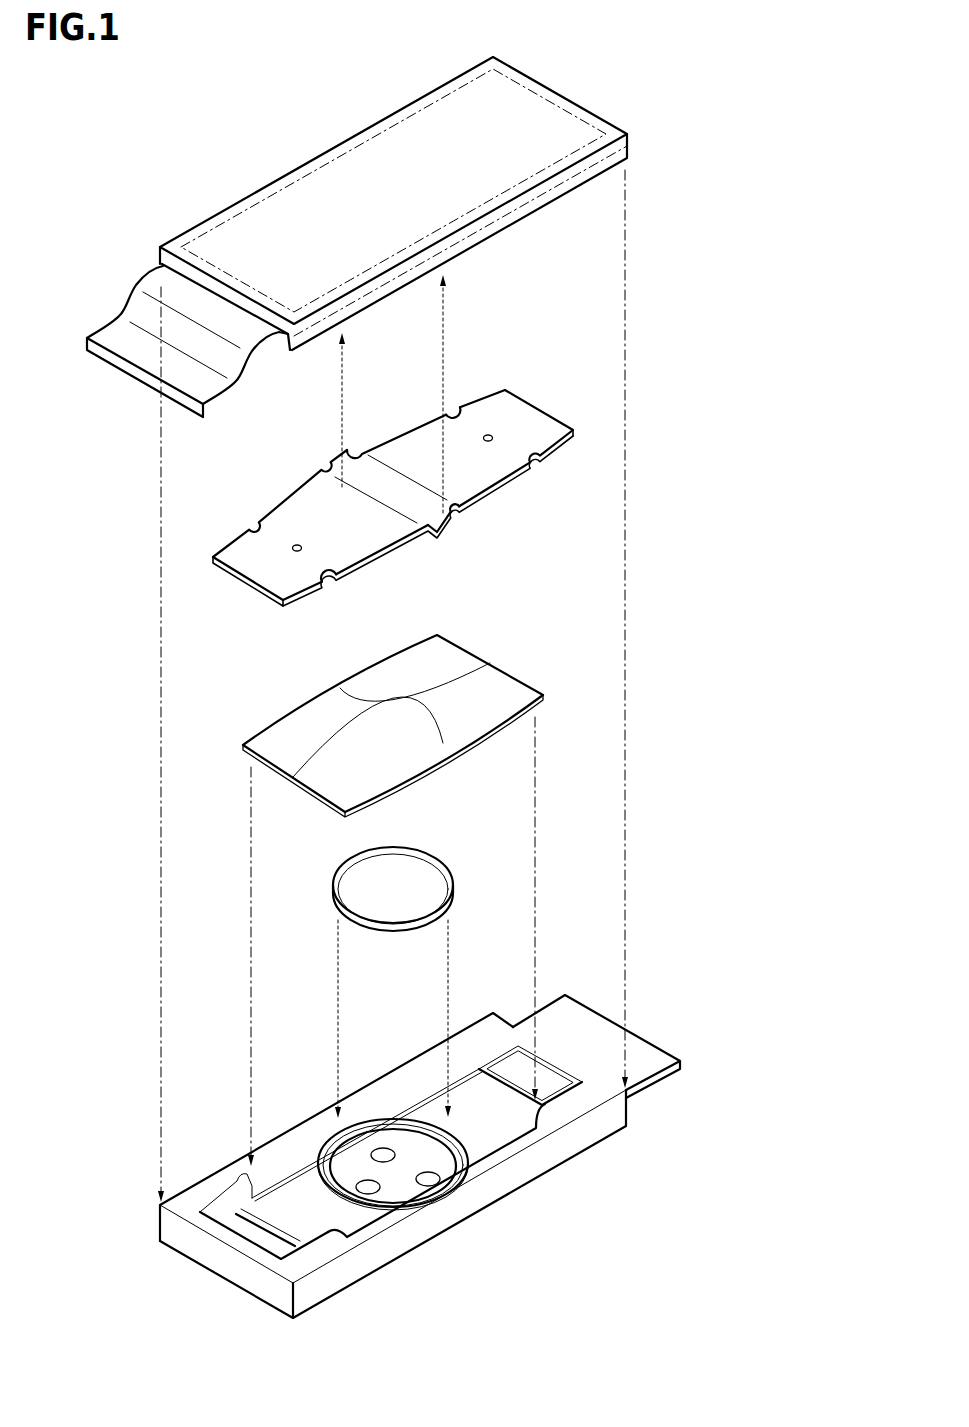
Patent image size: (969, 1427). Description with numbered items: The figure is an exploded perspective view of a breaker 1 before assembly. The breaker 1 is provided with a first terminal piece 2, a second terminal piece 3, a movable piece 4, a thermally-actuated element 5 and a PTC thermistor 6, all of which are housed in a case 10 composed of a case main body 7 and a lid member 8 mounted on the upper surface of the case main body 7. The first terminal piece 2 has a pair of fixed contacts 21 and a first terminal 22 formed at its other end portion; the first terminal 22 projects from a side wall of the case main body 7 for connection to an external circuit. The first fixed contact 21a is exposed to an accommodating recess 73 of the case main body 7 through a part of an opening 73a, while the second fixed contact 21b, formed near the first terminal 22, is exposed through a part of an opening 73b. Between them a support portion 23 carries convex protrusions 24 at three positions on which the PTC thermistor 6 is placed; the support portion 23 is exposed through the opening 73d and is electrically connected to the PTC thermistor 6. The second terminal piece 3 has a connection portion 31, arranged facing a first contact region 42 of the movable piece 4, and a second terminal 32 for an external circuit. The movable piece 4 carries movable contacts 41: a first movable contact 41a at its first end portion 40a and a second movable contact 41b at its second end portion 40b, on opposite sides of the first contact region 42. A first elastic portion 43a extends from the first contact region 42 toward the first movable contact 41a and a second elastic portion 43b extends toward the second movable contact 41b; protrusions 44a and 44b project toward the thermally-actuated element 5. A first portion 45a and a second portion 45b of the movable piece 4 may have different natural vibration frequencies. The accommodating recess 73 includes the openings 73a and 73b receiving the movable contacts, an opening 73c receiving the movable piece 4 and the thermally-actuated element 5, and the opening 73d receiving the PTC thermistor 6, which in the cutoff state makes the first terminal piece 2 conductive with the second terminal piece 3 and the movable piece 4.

The breaker 1 is at (712, 89).
The first terminal piece 2 is at (446, 1122).
The second terminal piece 3 is at (346, 242).
The movable piece 4 is at (393, 498).
The thermally-actuated element 5 is at (486, 696).
The PTC thermistor 6 is at (411, 872).
The case main body 7 is at (368, 1269).
The lid member 8 is at (320, 147).
The case 10 is at (600, 193).
The fixed contacts 21 is at (267, 1240).
The first fixed contact 21a is at (255, 1232).
The second fixed contact 21b is at (508, 1067).
The first terminal 22 is at (646, 1057).
The support portion 23 is at (360, 1166).
The protrusions 24 is at (430, 1181).
The connection portion 31 is at (380, 303).
The second terminal 32 is at (133, 348).
The first end portion 40a is at (252, 560).
The second end portion 40b is at (535, 432).
The movable contacts 41 is at (222, 580).
The first movable contact 41a is at (258, 600).
The second movable contact 41b is at (568, 446).
The first contact region 42 is at (363, 478).
The first elastic portion 43a is at (333, 508).
The second elastic portion 43b is at (458, 440).
The protrusion 44a is at (292, 545).
The protrusion 44b is at (490, 436).
The first portion 45a is at (352, 541).
The second portion 45b is at (487, 418).
The accommodating recess 73 is at (552, 1137).
The opening 73a is at (232, 1220).
The opening 73b is at (549, 1086).
The opening 73c is at (422, 1103).
The opening 73d is at (432, 1162).